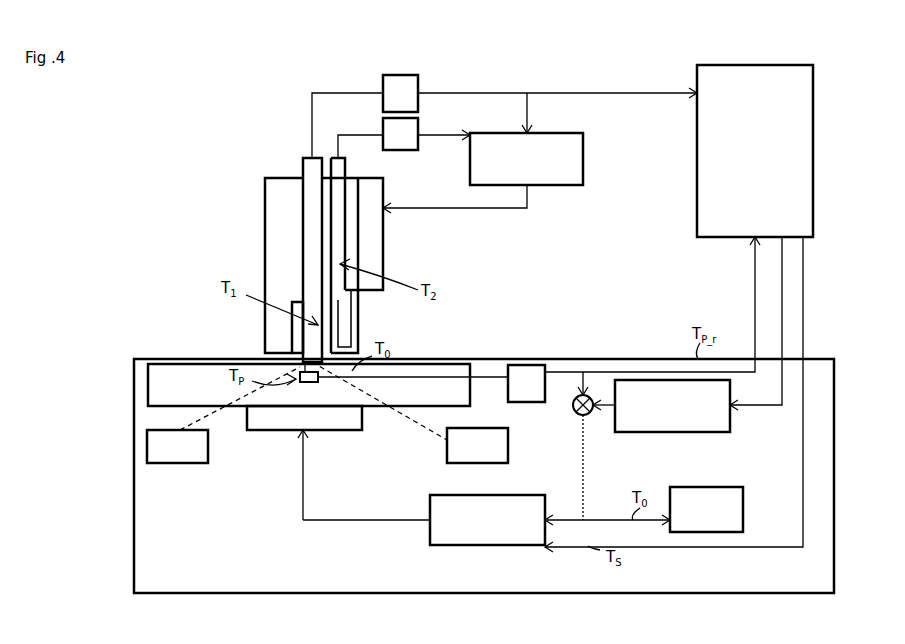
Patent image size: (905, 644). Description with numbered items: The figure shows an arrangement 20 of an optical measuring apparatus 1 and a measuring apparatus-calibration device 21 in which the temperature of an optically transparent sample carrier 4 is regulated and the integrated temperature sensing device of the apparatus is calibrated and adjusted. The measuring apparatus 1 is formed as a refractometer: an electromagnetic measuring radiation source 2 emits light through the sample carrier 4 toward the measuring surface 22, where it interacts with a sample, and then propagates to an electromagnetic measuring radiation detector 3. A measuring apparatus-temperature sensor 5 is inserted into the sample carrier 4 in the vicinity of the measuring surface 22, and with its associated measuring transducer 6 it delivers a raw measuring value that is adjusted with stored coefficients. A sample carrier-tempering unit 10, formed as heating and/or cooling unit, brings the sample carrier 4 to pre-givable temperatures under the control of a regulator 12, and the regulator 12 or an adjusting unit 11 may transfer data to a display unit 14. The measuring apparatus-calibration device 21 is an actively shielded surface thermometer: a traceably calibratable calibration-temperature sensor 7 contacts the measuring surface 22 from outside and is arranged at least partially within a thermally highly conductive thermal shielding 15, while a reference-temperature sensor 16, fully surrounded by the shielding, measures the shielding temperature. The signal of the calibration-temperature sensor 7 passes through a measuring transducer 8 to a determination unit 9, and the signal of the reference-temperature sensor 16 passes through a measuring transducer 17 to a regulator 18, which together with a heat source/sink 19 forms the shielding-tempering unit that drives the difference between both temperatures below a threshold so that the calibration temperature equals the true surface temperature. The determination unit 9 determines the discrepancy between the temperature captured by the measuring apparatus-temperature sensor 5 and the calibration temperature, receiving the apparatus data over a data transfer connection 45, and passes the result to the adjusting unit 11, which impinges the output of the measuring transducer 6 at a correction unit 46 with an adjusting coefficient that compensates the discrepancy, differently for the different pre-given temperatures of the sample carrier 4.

The optical measuring apparatus 1 is at (130, 407).
The electromagnetic measuring radiation source 2 is at (185, 463).
The electromagnetic measuring radiation detector 3 is at (447, 453).
The sample carrier 4 is at (192, 373).
The measuring apparatus-temperature sensor 5 is at (308, 383).
The measuring transducer 6 is at (518, 368).
The calibration-temperature sensor 7 is at (320, 272).
The measuring transducer 8 is at (400, 75).
The determination unit 9 is at (795, 65).
The sample carrier-tempering unit 10 is at (328, 430).
The adjusting unit 11 is at (672, 432).
The regulator 12 is at (430, 538).
The display unit 14 is at (690, 487).
The thermal shielding 15 is at (320, 236).
The reference-temperature sensor 16 is at (340, 284).
The measuring transducer 17 is at (398, 150).
The regulator 18 is at (545, 185).
The heat source/sink 19 is at (385, 248).
The arrangement 20 is at (150, 175).
The measuring apparatus-calibration device 21 is at (430, 150).
The measuring surface 22 is at (292, 368).
The data transfer connection 45 is at (803, 312).
The correction unit 46 is at (575, 408).